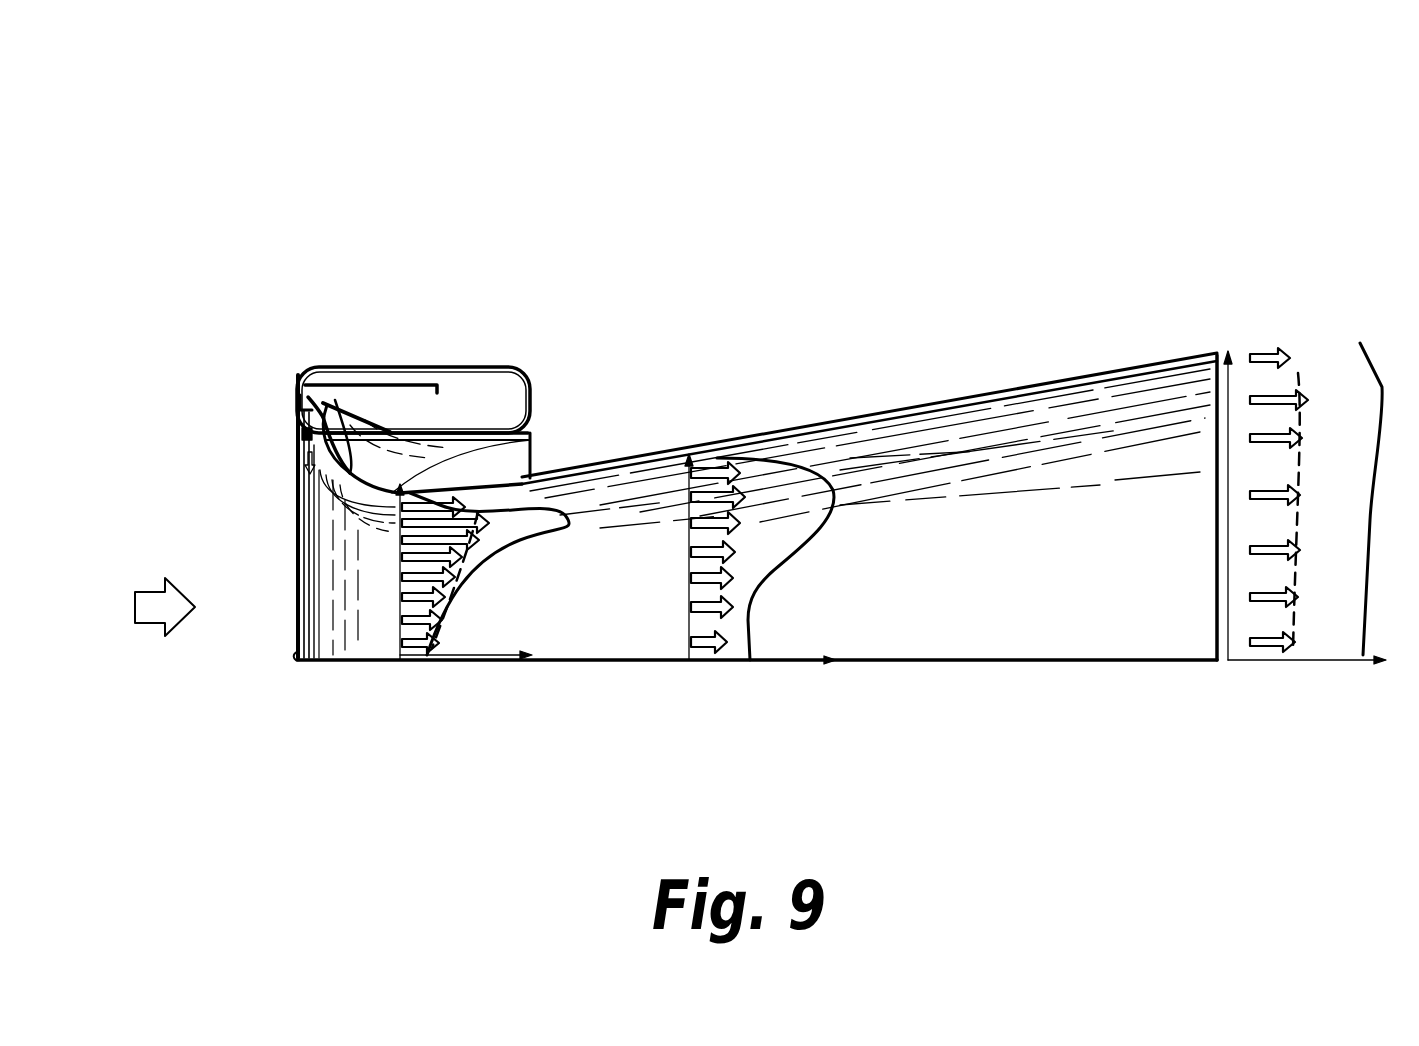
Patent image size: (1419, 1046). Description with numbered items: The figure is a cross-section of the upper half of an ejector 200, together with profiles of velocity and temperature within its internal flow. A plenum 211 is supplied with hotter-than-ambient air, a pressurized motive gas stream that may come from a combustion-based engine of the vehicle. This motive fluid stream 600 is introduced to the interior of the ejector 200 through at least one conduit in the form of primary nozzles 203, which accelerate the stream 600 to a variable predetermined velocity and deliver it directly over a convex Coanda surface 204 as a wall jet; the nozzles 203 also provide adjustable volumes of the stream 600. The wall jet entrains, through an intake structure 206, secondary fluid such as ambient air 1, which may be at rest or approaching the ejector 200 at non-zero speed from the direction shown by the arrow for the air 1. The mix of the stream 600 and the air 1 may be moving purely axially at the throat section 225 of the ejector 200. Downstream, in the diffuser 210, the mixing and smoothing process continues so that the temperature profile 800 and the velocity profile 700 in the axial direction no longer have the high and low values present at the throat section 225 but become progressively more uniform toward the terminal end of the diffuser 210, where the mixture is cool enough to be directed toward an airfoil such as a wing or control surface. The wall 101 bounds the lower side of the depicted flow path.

The ejector 200 is at (462, 175).
The plenum 211 is at (485, 414).
The intake structure 206 is at (305, 396).
The convex Coanda surface 204 is at (312, 400).
The motive fluid stream 600 is at (347, 470).
The primary nozzles 203 is at (297, 434).
The ambient air 1 is at (156, 600).
The throat section 225 is at (508, 478).
The diffuser 210 is at (557, 478).
The duct wall 101 is at (1212, 673).
The velocity profile 700 is at (440, 622).
The temperature profile 800 is at (556, 492).